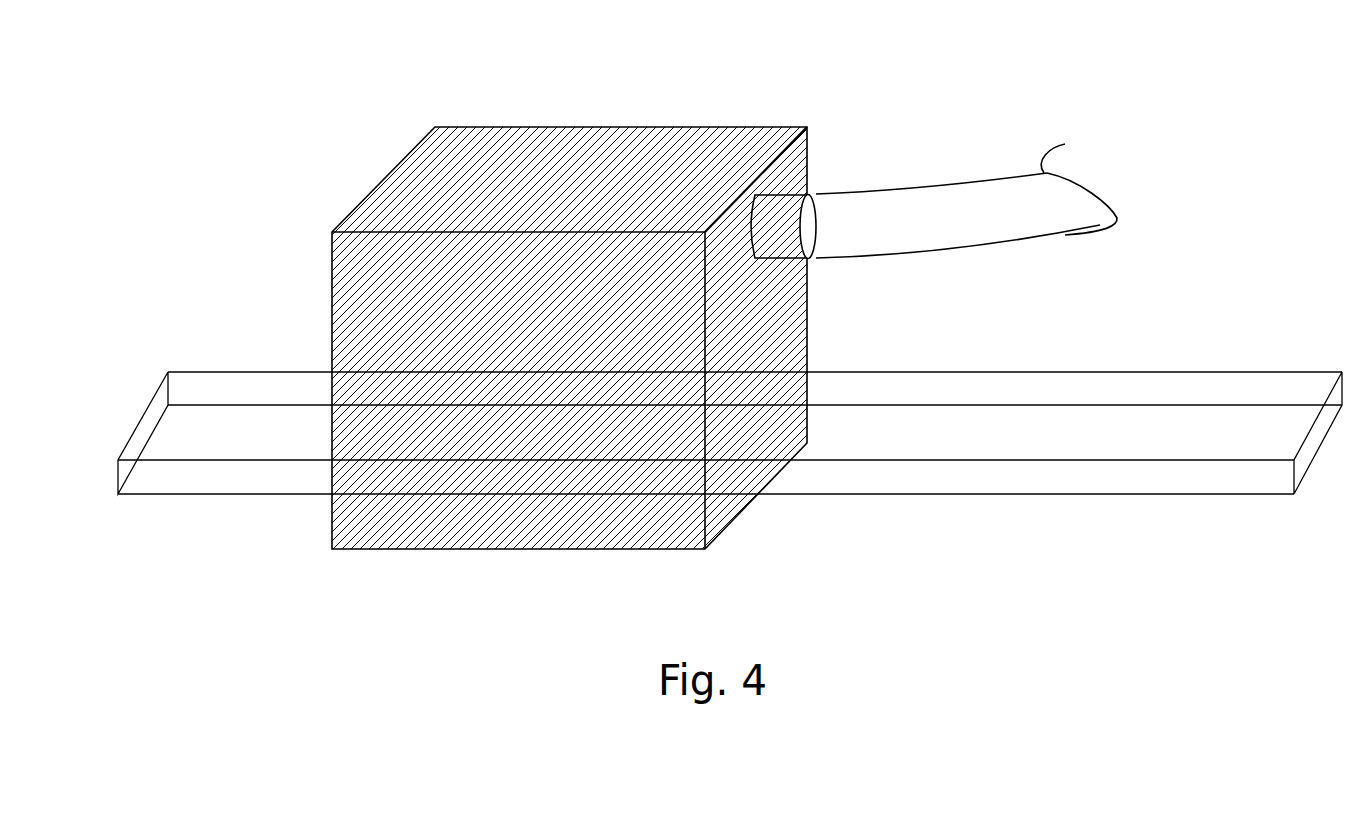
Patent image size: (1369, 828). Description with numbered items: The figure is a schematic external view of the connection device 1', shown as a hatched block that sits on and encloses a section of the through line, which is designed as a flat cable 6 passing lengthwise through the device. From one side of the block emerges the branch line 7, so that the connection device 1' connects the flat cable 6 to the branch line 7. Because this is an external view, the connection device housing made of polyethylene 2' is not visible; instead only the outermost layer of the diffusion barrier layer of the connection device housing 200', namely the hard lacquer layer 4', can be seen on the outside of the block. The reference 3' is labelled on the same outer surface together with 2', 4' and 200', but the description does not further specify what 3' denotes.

The connection device 1' is at (429, 303).
The connection device housing made of polyethylene 2' is at (429, 323).
The sensor 3' is at (429, 323).
The hard lacquer layer 4' is at (429, 323).
The diffusion barrier layer of the connection device housing 200' is at (429, 323).
The flat cable 6 is at (1025, 494).
The branch line 7 is at (913, 190).